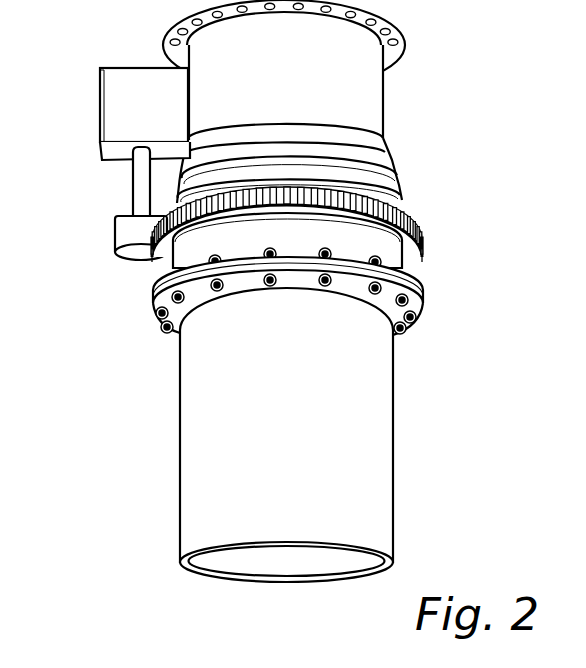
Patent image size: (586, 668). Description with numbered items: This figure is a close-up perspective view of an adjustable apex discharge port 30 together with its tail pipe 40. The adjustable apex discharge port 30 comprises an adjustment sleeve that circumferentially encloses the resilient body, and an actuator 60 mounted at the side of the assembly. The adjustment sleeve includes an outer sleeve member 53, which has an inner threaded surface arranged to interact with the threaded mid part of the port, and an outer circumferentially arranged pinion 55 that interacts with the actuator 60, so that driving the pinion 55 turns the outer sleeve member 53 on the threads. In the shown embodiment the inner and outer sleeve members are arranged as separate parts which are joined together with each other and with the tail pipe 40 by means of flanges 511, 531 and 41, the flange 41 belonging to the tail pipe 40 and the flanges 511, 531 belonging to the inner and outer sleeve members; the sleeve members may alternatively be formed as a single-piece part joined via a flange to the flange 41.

The adjustable apex discharge port 30 is at (426, 104).
The actuator 60 is at (130, 114).
The pinion 55 is at (413, 217).
The outer sleeve member 53 is at (380, 248).
The flange 531 is at (148, 297).
The flange 511 is at (156, 288).
The flange 41 is at (151, 304).
The tail pipe 40 is at (342, 421).